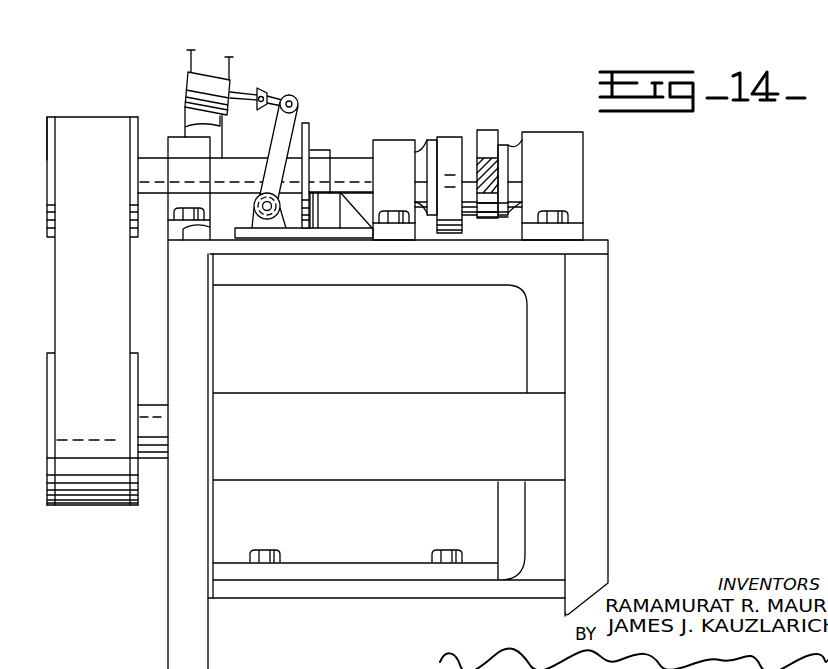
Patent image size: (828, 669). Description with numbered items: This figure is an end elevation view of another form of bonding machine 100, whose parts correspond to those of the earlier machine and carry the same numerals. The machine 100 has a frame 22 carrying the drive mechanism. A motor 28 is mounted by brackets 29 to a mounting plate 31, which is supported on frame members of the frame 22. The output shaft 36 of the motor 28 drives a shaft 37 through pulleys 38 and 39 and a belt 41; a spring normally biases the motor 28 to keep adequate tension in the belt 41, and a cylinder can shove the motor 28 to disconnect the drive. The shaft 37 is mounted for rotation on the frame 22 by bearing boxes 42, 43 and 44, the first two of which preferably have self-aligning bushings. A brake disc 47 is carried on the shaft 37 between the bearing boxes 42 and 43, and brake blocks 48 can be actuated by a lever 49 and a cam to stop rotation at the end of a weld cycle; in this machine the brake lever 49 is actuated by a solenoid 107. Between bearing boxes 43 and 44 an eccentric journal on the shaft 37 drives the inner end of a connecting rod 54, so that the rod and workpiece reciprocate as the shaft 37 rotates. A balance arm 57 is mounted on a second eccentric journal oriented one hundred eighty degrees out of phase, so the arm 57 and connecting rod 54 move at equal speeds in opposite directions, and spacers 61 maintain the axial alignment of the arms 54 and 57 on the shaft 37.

The bonding machine 100 is at (394, 88).
The solenoid 107 is at (207, 78).
The lever 49 is at (311, 92).
The brake disc 47 is at (311, 135).
The pulley 39 is at (60, 96).
The shaft 37 is at (152, 171).
The bearing box 42 is at (205, 172).
The bearing box 43 is at (406, 174).
The spacers 61 is at (432, 140).
The balance arm 57 is at (444, 137).
The connecting rod 54 is at (488, 130).
The bearing box 44 is at (569, 172).
The belt 41 is at (102, 297).
The brake blocks 48 is at (304, 220).
The machine frame 22 is at (356, 248).
The motor 28 is at (378, 350).
The output shaft 36 is at (152, 417).
The pulley 38 is at (50, 508).
The brackets 29 is at (342, 569).
The mounting plate 31 is at (270, 592).